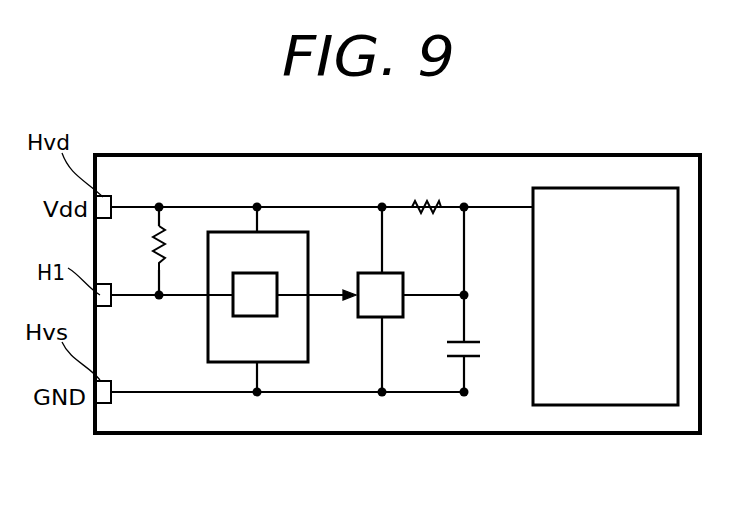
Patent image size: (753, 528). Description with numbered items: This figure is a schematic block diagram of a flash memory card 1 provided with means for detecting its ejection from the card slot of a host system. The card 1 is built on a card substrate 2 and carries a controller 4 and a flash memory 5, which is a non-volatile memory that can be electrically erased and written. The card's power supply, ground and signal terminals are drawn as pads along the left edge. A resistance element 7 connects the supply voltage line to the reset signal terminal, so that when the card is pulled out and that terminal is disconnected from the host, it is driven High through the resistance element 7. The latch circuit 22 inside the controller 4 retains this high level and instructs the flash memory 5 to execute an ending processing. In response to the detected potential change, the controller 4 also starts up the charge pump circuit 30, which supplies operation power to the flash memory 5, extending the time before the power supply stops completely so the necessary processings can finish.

The flash memory card 1 is at (664, 152).
The card substrate 2 is at (692, 343).
The controller 4 is at (280, 352).
The flash memory 5 is at (622, 400).
The resistance element 7 is at (170, 248).
The latch circuit 22 is at (266, 278).
The charge pump circuit 30 is at (392, 275).